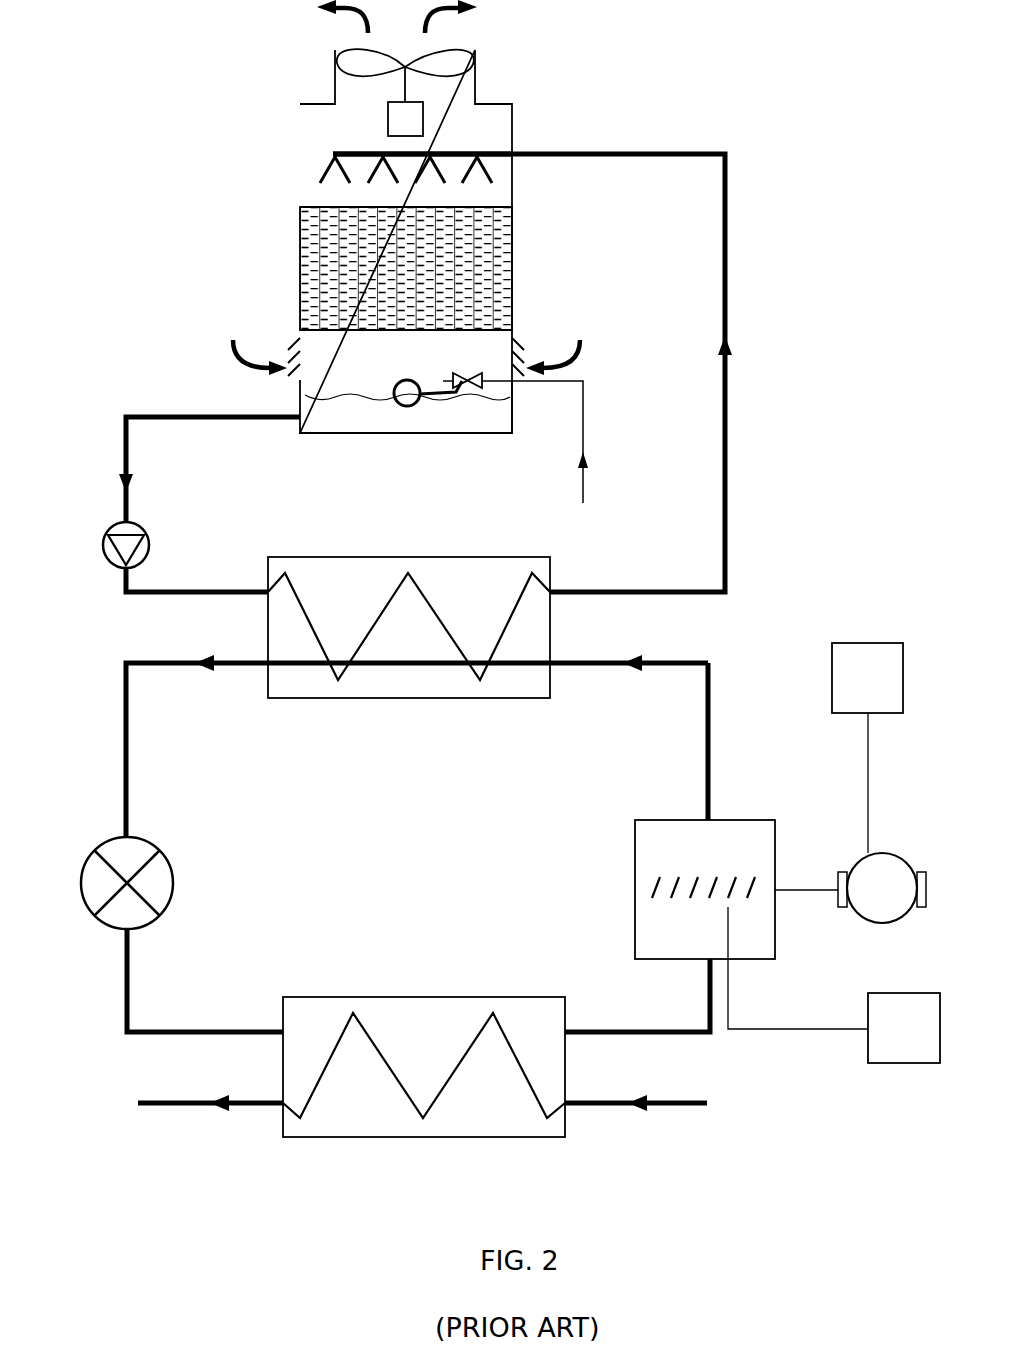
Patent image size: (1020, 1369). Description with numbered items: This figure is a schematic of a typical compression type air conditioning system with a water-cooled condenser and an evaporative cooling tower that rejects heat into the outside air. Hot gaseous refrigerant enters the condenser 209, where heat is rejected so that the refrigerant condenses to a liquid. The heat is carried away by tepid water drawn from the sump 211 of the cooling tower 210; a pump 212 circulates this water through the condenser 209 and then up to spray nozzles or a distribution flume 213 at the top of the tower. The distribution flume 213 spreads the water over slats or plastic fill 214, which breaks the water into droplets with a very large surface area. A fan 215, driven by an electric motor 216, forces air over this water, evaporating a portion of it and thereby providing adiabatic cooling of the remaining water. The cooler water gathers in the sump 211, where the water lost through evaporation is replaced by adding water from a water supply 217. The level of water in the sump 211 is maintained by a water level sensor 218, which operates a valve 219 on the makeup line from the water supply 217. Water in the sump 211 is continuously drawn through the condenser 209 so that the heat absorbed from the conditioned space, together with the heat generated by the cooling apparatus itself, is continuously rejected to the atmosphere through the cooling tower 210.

The condenser 209 is at (365, 707).
The cooling tower 210 is at (292, 190).
The sump 211 is at (443, 442).
The pump 212 is at (109, 562).
The spray nozzles or distribution flume 213 is at (468, 144).
The slats or plastic fill 214 is at (495, 258).
The fan 215 is at (468, 40).
The electric motor 216 is at (380, 122).
The water supply 217 is at (588, 443).
The water level sensor 218 is at (399, 405).
The valve 219 is at (478, 390).